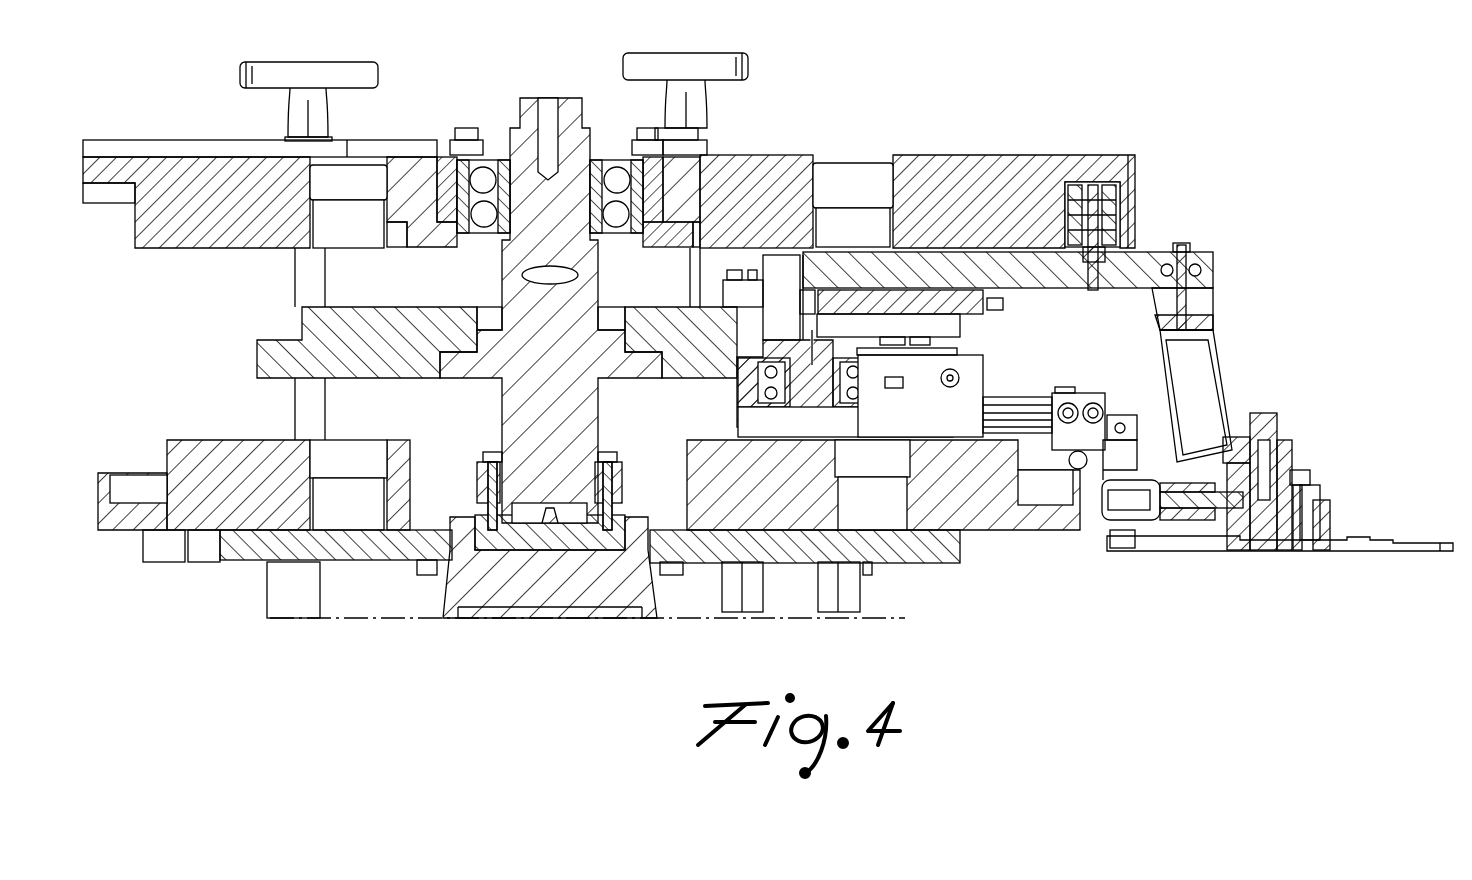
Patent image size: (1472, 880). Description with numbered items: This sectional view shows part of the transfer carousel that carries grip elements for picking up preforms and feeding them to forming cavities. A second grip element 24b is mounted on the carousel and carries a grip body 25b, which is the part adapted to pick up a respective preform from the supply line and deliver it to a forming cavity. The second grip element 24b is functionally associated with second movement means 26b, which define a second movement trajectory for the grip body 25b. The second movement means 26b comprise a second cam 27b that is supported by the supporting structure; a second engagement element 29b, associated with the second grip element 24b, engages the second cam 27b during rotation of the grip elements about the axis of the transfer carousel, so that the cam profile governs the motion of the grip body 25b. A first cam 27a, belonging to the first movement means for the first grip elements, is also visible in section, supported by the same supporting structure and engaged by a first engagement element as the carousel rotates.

The second movement means 26b is at (1101, 150).
The second engagement element 29b is at (1097, 184).
The second cam 27b is at (1145, 185).
The first cam 27a is at (1033, 530).
The second grip element 24b is at (1342, 512).
The grip body 25b is at (1405, 556).